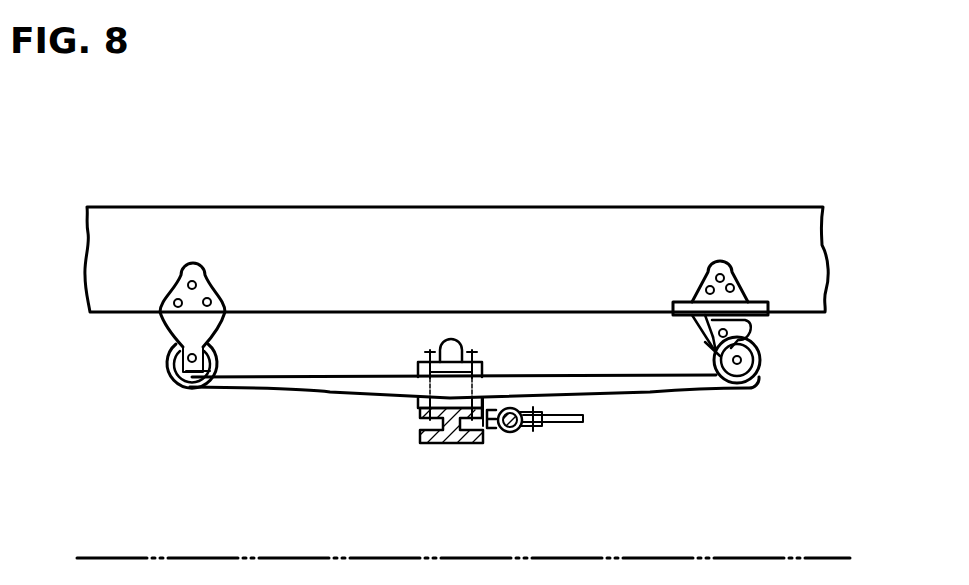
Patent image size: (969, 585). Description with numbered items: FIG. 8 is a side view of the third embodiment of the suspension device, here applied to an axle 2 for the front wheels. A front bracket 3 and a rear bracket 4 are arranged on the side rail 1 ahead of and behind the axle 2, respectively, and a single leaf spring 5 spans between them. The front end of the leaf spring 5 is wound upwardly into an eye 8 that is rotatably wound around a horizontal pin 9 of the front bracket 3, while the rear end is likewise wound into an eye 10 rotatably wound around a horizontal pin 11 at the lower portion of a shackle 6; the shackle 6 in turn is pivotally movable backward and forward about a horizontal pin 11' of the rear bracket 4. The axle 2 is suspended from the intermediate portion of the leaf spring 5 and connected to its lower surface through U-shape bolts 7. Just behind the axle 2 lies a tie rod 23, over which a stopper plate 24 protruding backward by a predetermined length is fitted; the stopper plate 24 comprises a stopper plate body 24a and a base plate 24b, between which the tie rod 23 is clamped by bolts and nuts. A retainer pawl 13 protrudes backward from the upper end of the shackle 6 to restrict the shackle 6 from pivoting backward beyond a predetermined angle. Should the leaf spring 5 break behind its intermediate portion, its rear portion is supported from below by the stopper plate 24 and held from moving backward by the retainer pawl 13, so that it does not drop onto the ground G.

The side rail 1 is at (451, 222).
The axle 2 is at (420, 443).
The front bracket 3 is at (203, 287).
The rear bracket 4 is at (710, 270).
The leaf spring 5 is at (660, 392).
The shackle 6 is at (713, 352).
The U-shape bolts 7 is at (422, 358).
The eye 8 is at (170, 375).
The horizontal pin 9 is at (190, 386).
The eye 10 is at (760, 358).
The horizontal pin 11 is at (771, 391).
The horizontal pin 11' is at (678, 331).
The retainer pawl 13 is at (745, 317).
The tie rod 23 is at (503, 435).
The stopper plate 24 is at (547, 468).
The stopper plate body 24a is at (580, 423).
The base plate 24b is at (512, 437).
The ground G is at (272, 558).